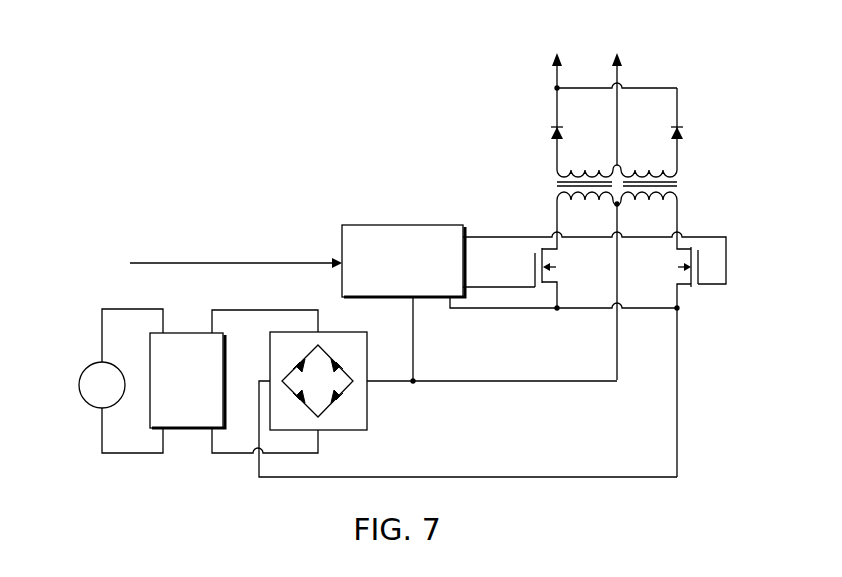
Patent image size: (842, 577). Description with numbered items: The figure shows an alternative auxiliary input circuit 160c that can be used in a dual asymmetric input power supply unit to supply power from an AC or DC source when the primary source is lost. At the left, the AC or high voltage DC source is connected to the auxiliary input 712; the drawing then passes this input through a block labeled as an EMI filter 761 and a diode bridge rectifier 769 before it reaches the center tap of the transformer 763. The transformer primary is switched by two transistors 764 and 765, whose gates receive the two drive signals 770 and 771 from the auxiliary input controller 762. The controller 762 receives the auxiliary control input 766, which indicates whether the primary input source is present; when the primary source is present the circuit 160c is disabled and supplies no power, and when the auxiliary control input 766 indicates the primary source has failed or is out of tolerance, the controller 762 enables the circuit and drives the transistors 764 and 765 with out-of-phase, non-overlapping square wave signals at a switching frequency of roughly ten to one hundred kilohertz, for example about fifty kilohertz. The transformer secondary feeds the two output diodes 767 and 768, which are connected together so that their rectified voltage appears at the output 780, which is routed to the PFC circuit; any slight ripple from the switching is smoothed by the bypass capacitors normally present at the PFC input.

The auxiliary input circuit 160c is at (330, 154).
The auxiliary input 712 is at (91, 367).
The EMI filter 761 is at (182, 333).
The auxiliary input controller 762 is at (388, 225).
The transformer 763 is at (670, 188).
The transistor 764 is at (537, 274).
The transistor 765 is at (700, 275).
The auxiliary control input 766 is at (177, 263).
The output diode 767 is at (553, 133).
The output diode 768 is at (680, 128).
The bridge rectifier 769 is at (367, 350).
The gate signal NGM1 770 is at (517, 287).
The gate signal NGM2 771 is at (726, 248).
The output 780 is at (555, 84).